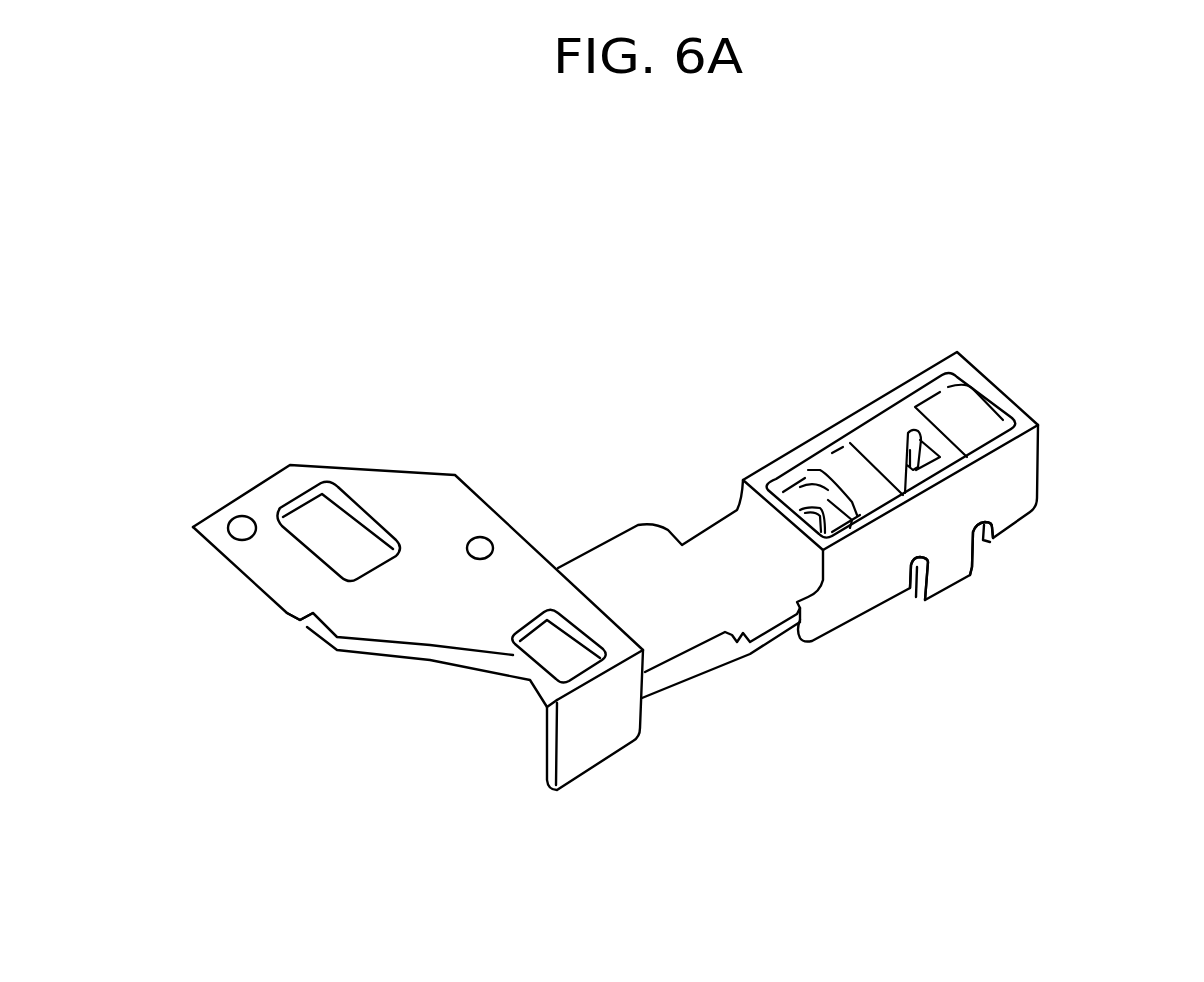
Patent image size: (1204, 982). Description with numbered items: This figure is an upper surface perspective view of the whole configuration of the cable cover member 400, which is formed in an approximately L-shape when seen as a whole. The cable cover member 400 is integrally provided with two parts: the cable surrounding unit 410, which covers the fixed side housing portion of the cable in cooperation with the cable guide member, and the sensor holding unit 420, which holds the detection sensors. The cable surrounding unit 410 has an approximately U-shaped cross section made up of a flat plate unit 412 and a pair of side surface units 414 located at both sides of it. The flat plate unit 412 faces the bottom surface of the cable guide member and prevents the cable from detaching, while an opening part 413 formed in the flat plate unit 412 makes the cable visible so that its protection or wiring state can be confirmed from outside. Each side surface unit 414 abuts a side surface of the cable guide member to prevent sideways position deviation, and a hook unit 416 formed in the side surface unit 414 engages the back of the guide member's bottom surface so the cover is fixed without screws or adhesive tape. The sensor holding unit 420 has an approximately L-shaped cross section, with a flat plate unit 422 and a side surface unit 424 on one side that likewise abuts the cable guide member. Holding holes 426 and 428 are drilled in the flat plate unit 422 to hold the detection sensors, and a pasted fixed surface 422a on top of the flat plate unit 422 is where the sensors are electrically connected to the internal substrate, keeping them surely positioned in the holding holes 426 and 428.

The cable cover member 400 is at (583, 259).
The cable surrounding unit 410 is at (828, 359).
The flat plate unit 412 is at (693, 562).
The opening part 413 is at (937, 435).
The side surface unit 414 is at (858, 607).
The hook unit 416 is at (915, 612).
The sensor holding unit 420 is at (389, 423).
The flat plate unit 422 is at (450, 515).
The pasted fixed surface 422a is at (362, 612).
The side surface unit 424 is at (605, 750).
The holding hole 426 is at (545, 622).
The holding hole 428 is at (328, 503).